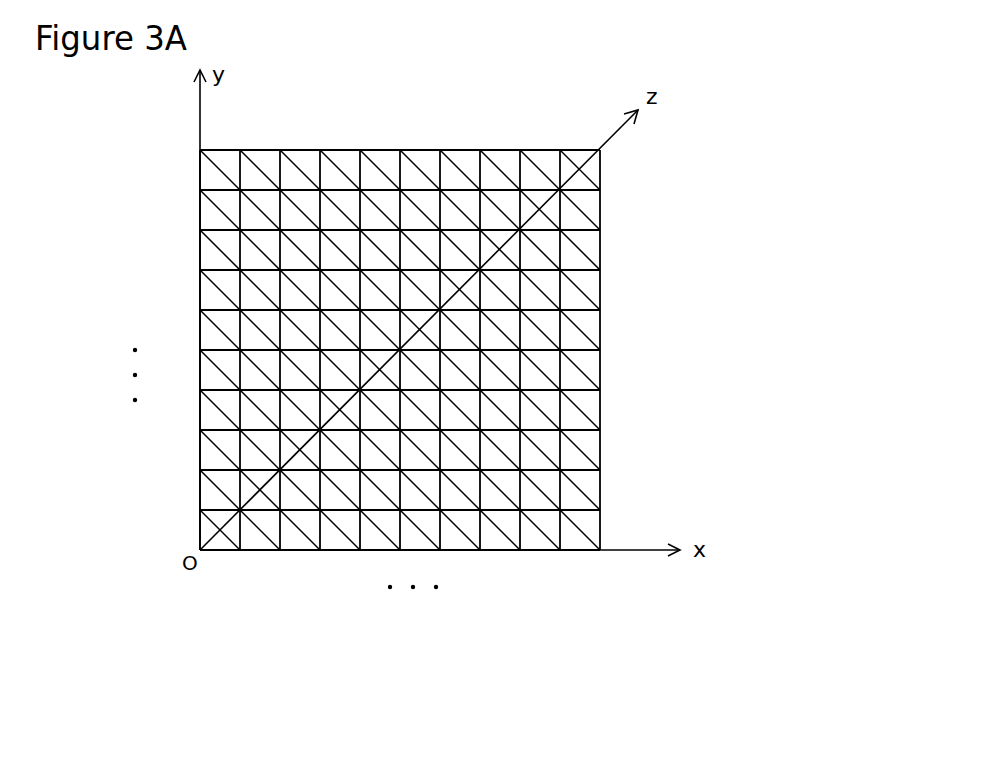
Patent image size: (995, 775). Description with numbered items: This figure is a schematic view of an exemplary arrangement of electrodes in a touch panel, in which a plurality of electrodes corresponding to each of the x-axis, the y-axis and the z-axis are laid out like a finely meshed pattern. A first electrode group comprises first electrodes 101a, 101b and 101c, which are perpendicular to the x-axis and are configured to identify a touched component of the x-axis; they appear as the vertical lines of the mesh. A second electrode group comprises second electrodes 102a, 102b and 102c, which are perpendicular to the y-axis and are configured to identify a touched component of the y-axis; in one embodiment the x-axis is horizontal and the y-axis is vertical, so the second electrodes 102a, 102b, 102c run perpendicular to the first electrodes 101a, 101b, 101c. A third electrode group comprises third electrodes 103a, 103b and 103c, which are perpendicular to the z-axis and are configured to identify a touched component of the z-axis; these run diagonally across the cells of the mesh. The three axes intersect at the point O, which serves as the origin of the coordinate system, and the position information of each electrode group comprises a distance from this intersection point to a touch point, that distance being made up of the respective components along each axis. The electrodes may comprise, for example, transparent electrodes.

The first electrode 101a is at (245, 535).
The first electrode 101b is at (283, 532).
The first electrode 101c is at (602, 530).
The second electrode 102a is at (213, 508).
The second electrode 102b is at (213, 468).
The second electrode 102c is at (213, 148).
The third electrode 103a is at (228, 542).
The third electrode 103b is at (262, 535).
The third electrode 103c is at (588, 175).